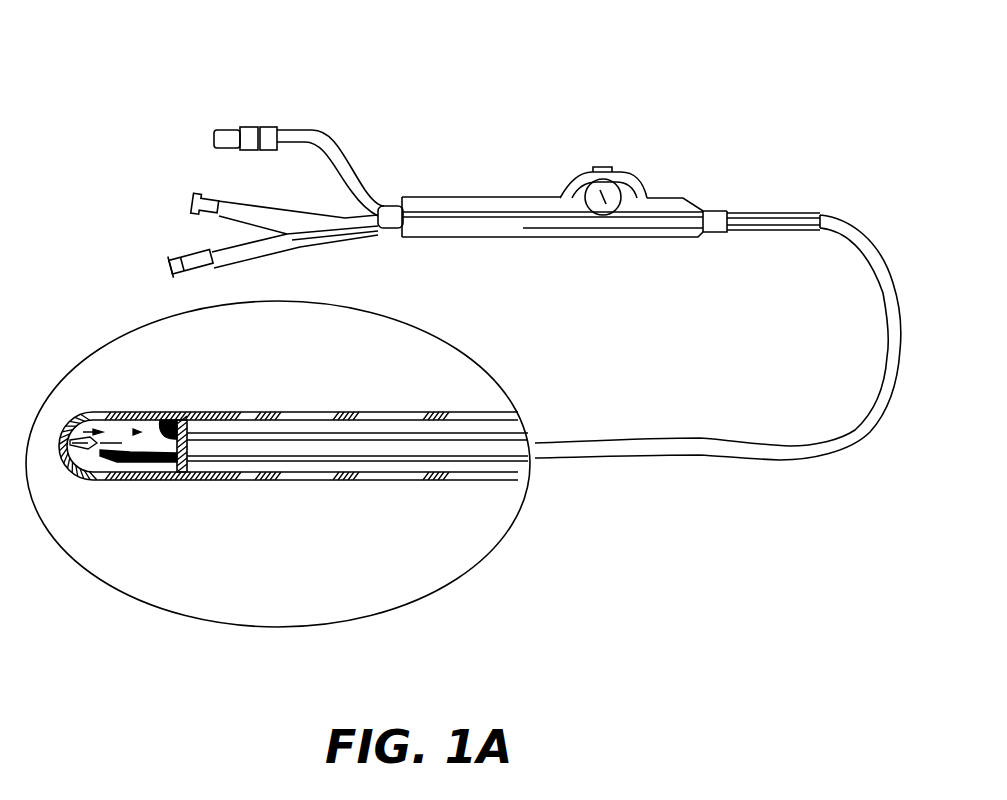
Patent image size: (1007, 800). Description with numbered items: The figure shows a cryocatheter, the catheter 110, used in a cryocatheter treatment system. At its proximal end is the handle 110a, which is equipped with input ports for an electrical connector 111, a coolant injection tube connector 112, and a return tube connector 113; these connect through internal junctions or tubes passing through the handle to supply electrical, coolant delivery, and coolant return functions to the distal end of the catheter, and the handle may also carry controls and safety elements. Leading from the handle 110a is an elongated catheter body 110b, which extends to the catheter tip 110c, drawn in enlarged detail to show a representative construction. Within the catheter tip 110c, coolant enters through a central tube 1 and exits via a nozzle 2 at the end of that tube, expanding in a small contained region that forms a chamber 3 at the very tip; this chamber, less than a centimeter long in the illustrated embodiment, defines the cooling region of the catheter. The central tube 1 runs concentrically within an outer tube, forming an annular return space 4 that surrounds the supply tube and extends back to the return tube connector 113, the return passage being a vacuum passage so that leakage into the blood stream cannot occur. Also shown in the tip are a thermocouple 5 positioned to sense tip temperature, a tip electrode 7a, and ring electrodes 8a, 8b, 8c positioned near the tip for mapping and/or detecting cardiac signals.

The central tube 1 is at (232, 462).
The nozzle 2 is at (168, 437).
The chamber 3 is at (117, 465).
The annular return space 4 is at (238, 433).
The thermocouple 5 is at (93, 472).
The tip electrode 7a is at (101, 412).
The ring electrode 8a is at (263, 481).
The ring electrode 8b is at (348, 481).
The ring electrode 8c is at (428, 481).
The catheter 110 is at (779, 139).
The handle 110a is at (560, 203).
The elongated catheter body 110b is at (884, 376).
The catheter tip 110c is at (365, 378).
The electrical connector 111 is at (230, 130).
The coolant injection tube connector 112 is at (170, 268).
The return tube connector 113 is at (192, 203).